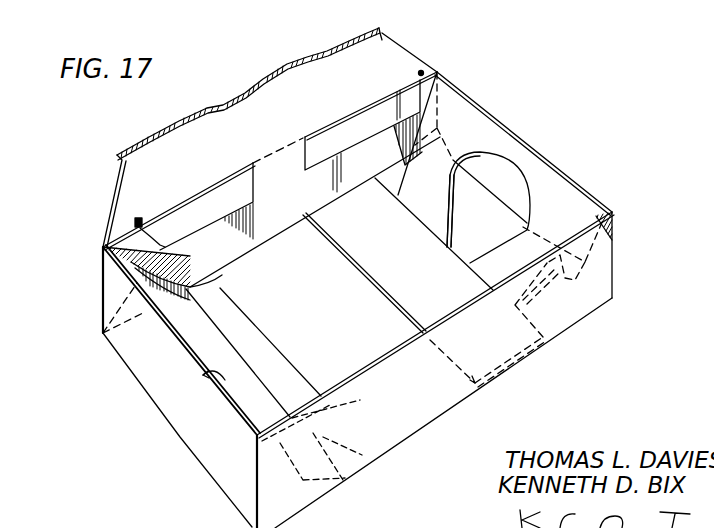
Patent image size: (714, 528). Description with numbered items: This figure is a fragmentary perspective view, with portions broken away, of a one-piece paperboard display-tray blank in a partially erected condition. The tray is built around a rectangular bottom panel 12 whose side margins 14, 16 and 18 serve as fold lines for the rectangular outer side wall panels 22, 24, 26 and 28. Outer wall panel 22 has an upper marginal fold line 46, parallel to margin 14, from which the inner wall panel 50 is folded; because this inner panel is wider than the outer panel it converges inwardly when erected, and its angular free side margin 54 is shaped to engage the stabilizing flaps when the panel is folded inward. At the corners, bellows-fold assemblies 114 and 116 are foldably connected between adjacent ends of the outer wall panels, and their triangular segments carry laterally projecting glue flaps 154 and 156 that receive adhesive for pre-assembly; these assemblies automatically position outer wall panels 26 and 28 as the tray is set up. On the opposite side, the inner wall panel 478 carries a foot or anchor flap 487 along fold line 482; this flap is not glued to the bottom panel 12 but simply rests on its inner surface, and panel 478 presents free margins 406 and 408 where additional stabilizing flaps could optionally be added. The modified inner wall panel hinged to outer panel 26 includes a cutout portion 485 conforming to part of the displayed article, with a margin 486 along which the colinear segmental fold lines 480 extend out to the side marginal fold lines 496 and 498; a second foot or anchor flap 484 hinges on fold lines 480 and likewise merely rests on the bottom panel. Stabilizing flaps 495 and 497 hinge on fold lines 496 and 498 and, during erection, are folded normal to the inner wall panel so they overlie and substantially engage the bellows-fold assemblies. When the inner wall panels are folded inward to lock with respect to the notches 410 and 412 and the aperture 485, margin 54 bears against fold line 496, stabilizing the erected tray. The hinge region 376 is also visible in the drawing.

The bottom panel 12 is at (346, 327).
The side margin 14 is at (278, 228).
The side margin 16 is at (460, 403).
The side margin 18 is at (178, 440).
The outer side wall panel 22 is at (300, 205).
The outer side wall panel 24 is at (430, 394).
The outer side wall panel 26 is at (183, 391).
The outer side wall panel 28 is at (508, 185).
The upper marginal fold line 46 is at (284, 150).
The inner wall panel 50 is at (303, 117).
The converging free side margin 54 is at (112, 195).
The bellows-fold assembly 114 is at (139, 217).
The bellows-fold assembly 116 is at (422, 70).
The glue flap 154 is at (218, 190).
The glue flap 156 is at (345, 130).
The hinge edge 376 is at (222, 392).
The free margin 406 is at (613, 233).
The free margin 408 is at (415, 101).
The notch 410 is at (612, 274).
The notch 412 is at (397, 145).
The inner wall panel 478 is at (484, 137).
The segmental fold lines 480 is at (220, 277).
The fold line 482 is at (427, 208).
The foot or anchor flap 484 is at (272, 353).
The cutout portion 485 is at (180, 337).
The margin 486 is at (217, 317).
The foot or anchor flap 487 is at (414, 280).
The stabilizing flap 495 is at (166, 240).
The side marginal fold line 496 is at (194, 253).
The stabilizing flap 497 is at (358, 414).
The side marginal fold line 498 is at (305, 485).